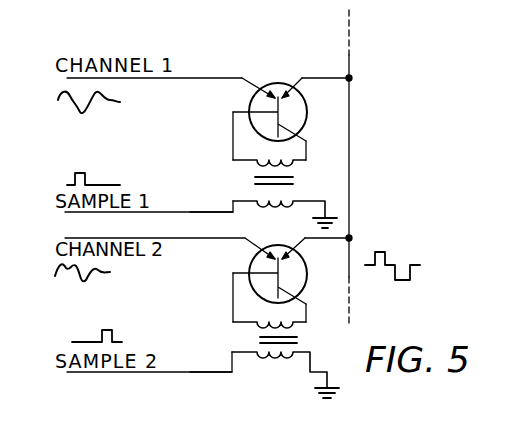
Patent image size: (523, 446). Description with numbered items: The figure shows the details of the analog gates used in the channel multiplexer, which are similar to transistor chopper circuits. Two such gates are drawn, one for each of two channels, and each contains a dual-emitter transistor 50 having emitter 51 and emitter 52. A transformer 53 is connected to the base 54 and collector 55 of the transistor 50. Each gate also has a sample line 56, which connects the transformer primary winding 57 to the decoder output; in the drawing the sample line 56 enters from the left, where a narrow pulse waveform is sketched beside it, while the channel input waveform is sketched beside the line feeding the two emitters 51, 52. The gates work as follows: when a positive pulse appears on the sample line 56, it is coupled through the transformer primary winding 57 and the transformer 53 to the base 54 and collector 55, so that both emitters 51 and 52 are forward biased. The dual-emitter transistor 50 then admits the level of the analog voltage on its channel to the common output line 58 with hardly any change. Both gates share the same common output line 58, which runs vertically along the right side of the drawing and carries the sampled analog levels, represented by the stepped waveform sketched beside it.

The dual-emitter transistor 50 is at (307, 102).
The emitter 51 is at (303, 80).
The emitter 52 is at (255, 85).
The transformer 53 is at (294, 184).
The base 54 is at (233, 112).
The collector 55 is at (306, 138).
The sample line 56 is at (198, 211).
The transformer primary winding 57 is at (258, 201).
The common output line 58 is at (351, 121).